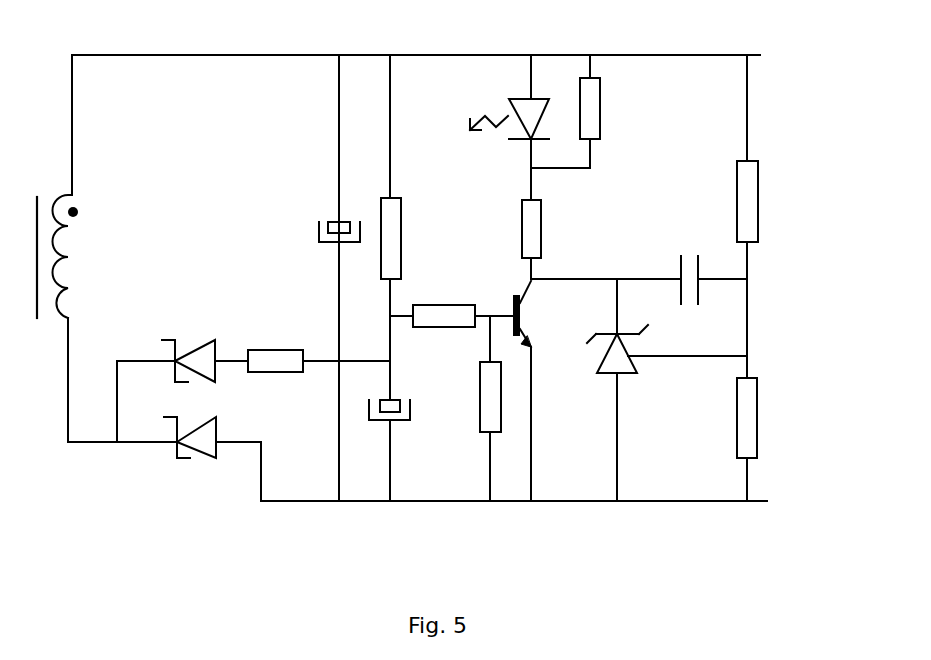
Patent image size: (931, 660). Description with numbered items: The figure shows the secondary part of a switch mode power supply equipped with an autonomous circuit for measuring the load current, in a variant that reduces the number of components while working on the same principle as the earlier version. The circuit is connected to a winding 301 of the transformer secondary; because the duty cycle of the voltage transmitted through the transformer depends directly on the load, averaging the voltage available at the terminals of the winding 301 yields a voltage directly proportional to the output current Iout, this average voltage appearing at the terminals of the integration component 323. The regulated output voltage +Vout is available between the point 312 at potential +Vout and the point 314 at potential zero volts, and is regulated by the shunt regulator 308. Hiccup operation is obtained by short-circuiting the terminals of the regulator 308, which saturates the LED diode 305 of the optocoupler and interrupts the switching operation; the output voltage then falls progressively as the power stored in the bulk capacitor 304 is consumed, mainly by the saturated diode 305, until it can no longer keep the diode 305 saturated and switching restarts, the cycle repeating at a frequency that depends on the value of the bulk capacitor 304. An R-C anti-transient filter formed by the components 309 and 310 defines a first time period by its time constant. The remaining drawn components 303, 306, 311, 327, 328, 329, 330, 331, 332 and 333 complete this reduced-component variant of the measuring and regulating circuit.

The secondary winding 301 is at (55, 270).
The capacitor 303 is at (333, 221).
The bulk capacitor 304 is at (392, 412).
The LED diode of the optocoupler 305 is at (530, 118).
The resistor 306 is at (592, 103).
The shunt regulator 308 is at (617, 360).
The anti-transient filter component 309 is at (690, 270).
The anti-transient filter component 310 is at (747, 230).
The resistor 311 is at (747, 438).
The output point at potential +Vout 312 is at (733, 53).
The output point at potential 0V 314 is at (692, 502).
The integration circuit component 323 is at (495, 393).
The zener diode 327 is at (188, 345).
The zener diode 328 is at (203, 443).
The resistor 329 is at (260, 360).
The resistor 330 is at (388, 240).
The resistor 331 is at (422, 318).
The resistor 332 is at (530, 245).
The transistor 333 is at (523, 317).